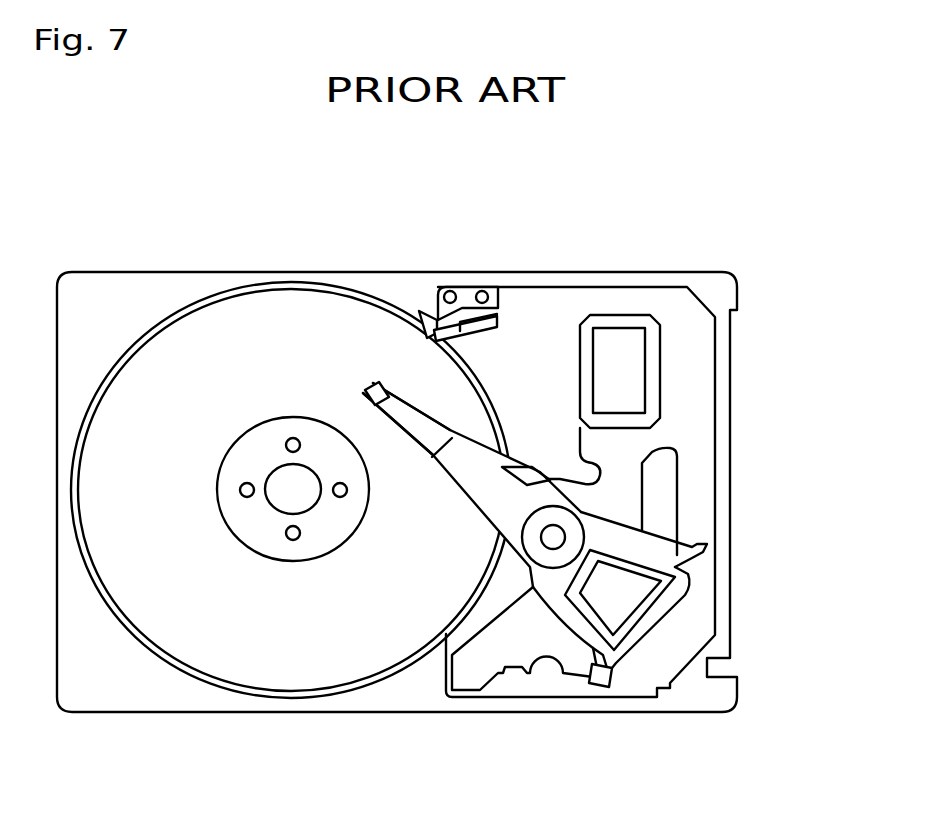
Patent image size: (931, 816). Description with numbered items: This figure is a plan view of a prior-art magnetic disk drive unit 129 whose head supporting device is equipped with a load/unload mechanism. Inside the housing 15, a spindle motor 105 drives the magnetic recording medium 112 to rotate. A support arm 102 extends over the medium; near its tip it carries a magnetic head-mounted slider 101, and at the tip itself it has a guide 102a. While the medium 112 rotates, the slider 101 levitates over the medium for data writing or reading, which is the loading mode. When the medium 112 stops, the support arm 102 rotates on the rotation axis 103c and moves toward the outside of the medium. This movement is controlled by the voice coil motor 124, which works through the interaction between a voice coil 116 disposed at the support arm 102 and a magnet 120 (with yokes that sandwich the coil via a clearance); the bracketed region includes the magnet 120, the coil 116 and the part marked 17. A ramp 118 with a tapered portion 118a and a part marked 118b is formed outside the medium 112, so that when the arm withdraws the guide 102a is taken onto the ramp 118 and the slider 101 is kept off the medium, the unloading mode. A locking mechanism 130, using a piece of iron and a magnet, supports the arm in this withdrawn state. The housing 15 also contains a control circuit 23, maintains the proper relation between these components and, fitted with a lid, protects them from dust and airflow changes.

The housing 15 is at (120, 688).
The coil support arm 17 is at (708, 548).
The control circuit 23 is at (625, 373).
The magnetic head-mounted slider 101 is at (377, 387).
The support arm 102 is at (423, 430).
The guide 102a is at (369, 385).
The rotation axis 103c is at (553, 537).
The spindle motor 105 is at (292, 490).
The magnetic recording medium 112 is at (158, 395).
The voice coil 116 is at (665, 609).
The ramp 118 is at (432, 313).
The tapered portion 118a is at (446, 305).
The ramp flat portion 118b is at (500, 312).
The magnet 120 is at (663, 527).
The voice coil motor 124 is at (700, 558).
The magnetic disk drive unit 129 is at (382, 815).
The locking mechanism 130 is at (603, 682).